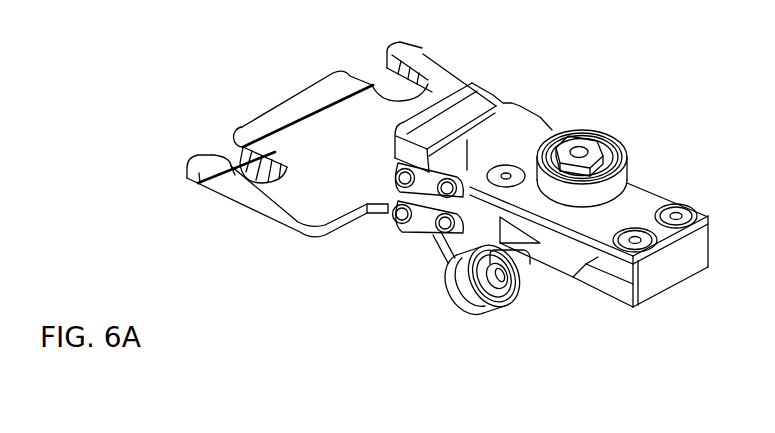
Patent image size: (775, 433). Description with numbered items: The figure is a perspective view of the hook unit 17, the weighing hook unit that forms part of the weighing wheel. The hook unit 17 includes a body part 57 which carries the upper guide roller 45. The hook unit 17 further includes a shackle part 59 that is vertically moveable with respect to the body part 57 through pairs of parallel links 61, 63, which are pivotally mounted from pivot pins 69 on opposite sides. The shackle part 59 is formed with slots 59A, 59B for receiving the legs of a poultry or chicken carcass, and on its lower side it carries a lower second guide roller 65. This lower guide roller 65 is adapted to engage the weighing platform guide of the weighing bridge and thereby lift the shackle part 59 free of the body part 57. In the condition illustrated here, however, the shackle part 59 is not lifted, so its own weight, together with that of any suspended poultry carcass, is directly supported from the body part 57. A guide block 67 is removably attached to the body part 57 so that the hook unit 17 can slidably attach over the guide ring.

The hook unit 17 is at (648, 96).
The upper guide roller 45 is at (622, 180).
The body part 57 is at (525, 123).
The shackle part 59 is at (323, 134).
The slot 59A is at (243, 166).
The slot 59B is at (388, 81).
The parallel link 61 is at (428, 187).
The parallel link 63 is at (427, 225).
The lower guide roller 65 is at (453, 285).
The guide block 67 is at (668, 277).
The pivot pin 69 is at (400, 215).